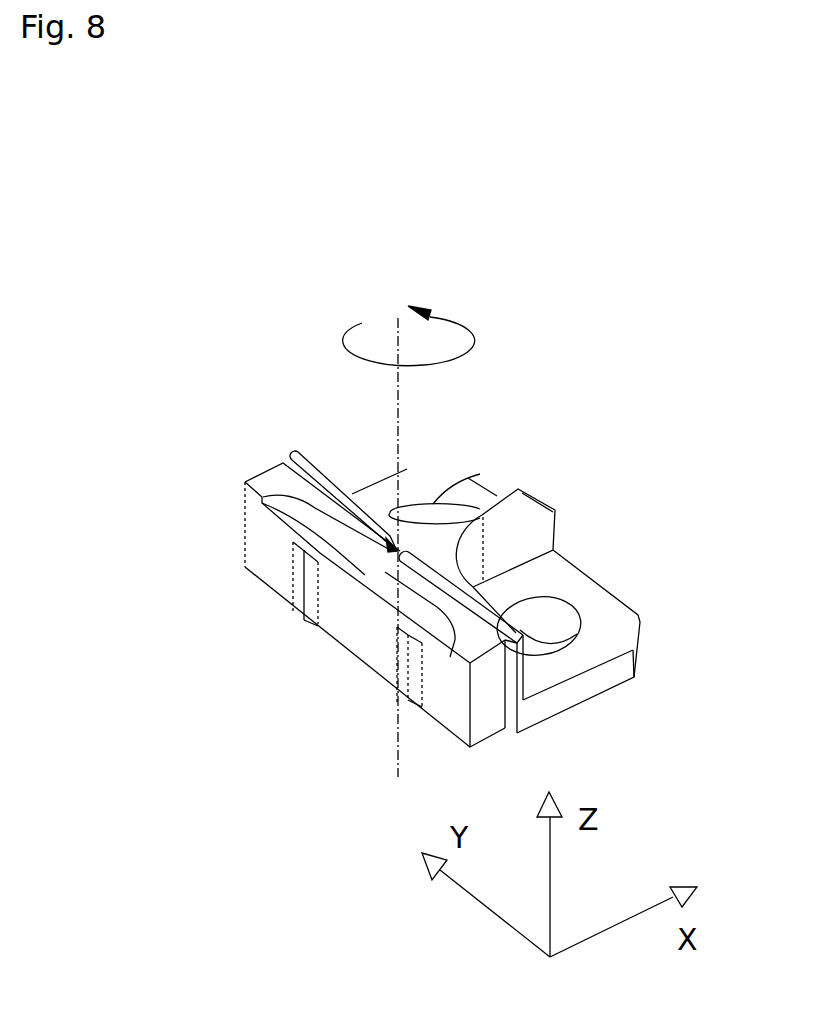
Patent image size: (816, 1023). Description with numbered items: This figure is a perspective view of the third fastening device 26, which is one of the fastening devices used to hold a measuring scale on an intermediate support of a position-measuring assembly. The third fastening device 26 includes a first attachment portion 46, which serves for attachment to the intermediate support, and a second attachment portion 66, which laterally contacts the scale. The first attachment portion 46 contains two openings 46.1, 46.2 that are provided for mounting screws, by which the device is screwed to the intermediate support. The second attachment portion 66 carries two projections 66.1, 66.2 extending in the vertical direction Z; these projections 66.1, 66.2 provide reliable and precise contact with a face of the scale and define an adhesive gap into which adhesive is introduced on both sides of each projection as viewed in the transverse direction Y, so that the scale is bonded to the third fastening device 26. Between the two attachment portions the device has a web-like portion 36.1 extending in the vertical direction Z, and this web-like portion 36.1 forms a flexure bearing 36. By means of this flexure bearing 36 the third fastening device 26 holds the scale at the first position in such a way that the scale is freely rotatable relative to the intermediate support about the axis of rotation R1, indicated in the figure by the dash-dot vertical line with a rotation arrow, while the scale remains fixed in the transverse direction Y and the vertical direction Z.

The third fastening device 26 is at (198, 258).
The flexure bearing 36 is at (395, 548).
The web-like portion 36.1 is at (268, 495).
The first attachment portion 46 is at (562, 575).
The opening 46.1 is at (533, 633).
The opening 46.2 is at (407, 469).
The second attachment portion 66 is at (337, 617).
The projection 66.1 is at (407, 663).
The projection 66.2 is at (298, 581).
The axis of rotation R1 is at (398, 755).